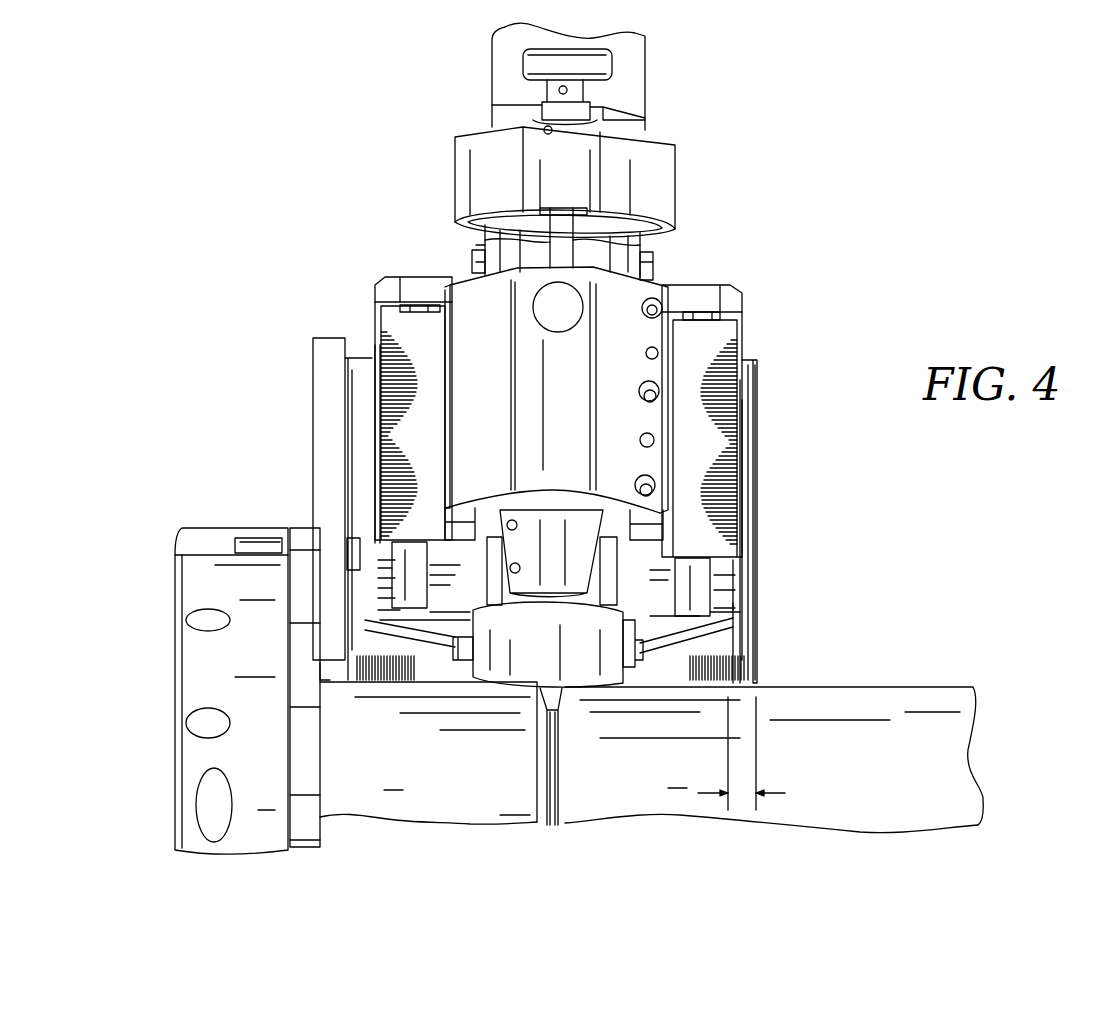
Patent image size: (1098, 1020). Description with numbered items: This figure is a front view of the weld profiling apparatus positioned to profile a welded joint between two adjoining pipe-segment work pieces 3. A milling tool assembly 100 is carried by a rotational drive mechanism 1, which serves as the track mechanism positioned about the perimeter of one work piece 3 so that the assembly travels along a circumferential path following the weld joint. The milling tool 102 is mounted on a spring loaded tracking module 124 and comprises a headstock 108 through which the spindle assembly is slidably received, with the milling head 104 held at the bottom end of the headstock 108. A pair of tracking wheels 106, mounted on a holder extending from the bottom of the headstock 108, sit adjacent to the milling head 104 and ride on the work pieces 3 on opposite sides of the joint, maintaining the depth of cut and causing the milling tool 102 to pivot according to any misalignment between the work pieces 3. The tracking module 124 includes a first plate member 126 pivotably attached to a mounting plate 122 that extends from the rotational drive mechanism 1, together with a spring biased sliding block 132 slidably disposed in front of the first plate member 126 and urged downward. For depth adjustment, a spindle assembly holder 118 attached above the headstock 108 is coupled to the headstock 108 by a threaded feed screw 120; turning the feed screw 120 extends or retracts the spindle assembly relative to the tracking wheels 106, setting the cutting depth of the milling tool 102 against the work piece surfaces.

The rotational drive mechanism 1 is at (187, 558).
The work pieces 3 is at (651, 757).
The milling tool assembly 100 is at (826, 220).
The milling tool 102 is at (675, 178).
The milling head 104 is at (560, 710).
The tracking wheels 106 is at (453, 660).
The headstock 108 is at (500, 315).
The spindle assembly holder 118 is at (457, 162).
The threaded feed screw 120 is at (660, 257).
The mounting plate 122 is at (748, 492).
The spring loaded tracking module 124 is at (745, 302).
The first plate member 126 is at (733, 603).
The sliding block 132 is at (733, 527).